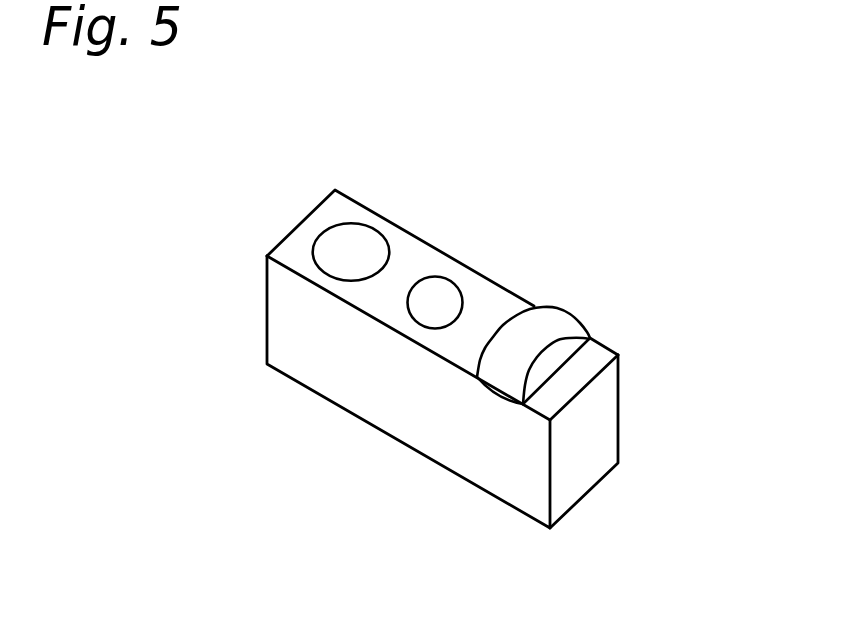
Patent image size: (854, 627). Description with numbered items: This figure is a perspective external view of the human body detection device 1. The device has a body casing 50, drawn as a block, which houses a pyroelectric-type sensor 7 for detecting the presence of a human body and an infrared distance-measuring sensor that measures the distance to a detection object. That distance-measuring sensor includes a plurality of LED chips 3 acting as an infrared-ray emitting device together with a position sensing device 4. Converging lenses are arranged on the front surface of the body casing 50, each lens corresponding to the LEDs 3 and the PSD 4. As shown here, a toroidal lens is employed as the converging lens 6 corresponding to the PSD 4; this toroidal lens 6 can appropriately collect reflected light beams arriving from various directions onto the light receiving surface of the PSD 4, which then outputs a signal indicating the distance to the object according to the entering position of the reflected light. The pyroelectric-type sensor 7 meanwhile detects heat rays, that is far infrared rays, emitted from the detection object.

The human body detection device 1 is at (240, 250).
The body casing 50 is at (267, 317).
The pyroelectric-type sensor 7 is at (374, 223).
The LED chips 3 is at (456, 283).
The converging lens 6 is at (587, 322).
The position sensing device 4 is at (555, 378).